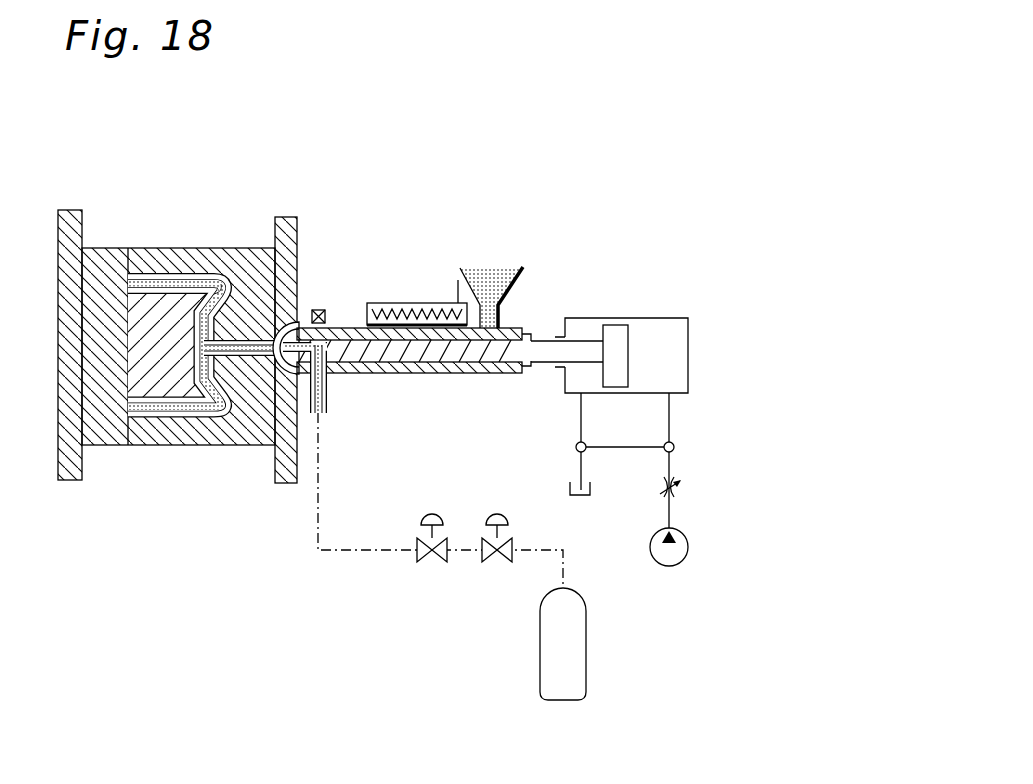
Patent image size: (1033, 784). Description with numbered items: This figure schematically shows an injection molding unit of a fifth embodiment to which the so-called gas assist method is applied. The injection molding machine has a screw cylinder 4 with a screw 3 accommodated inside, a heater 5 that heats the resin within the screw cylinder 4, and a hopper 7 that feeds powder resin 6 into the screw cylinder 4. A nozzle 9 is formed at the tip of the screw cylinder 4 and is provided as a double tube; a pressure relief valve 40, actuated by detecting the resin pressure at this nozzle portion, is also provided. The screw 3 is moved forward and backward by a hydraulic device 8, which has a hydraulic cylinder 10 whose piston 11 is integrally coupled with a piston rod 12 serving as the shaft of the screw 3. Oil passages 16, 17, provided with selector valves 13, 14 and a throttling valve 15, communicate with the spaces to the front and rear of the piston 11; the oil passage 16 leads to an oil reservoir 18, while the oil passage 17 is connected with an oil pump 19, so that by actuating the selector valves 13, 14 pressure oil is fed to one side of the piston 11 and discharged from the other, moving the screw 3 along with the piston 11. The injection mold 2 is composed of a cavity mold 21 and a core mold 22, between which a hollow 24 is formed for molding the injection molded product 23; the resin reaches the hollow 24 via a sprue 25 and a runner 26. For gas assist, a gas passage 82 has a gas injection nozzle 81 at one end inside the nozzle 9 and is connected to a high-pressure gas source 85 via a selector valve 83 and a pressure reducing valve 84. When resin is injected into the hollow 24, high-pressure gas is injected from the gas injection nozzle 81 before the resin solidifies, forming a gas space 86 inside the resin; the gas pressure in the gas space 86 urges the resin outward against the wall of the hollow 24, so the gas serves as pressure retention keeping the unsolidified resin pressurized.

The injection mold 2 is at (177, 343).
The screw 3 is at (438, 360).
The screw cylinder 4 is at (482, 373).
The heater 5 is at (400, 303).
The powder resin 6 is at (480, 275).
The hopper 7 is at (513, 287).
The hydraulic device 8 is at (628, 468).
The nozzle 9 is at (318, 310).
The hydraulic cylinder 10 is at (578, 318).
The piston 11 is at (618, 326).
The piston rod 12 is at (541, 373).
The selector valve 13 is at (576, 447).
The selector valve 14 is at (674, 447).
The throttling valve 15 is at (680, 490).
The oil passage 16 is at (583, 407).
The oil passage 17 is at (671, 410).
The oil reservoir 18 is at (568, 487).
The oil pump 19 is at (688, 540).
The cavity mold 21 is at (197, 447).
The core mold 22 is at (95, 448).
The injection molded product 23 is at (149, 264).
The hollow 24 is at (149, 264).
The sprue 25 is at (244, 323).
The runner 26 is at (232, 297).
The pressure relief valve 40 is at (307, 323).
The gas injection nozzle 81 is at (245, 447).
The gas passage 82 is at (320, 533).
The selector valve 83 is at (430, 565).
The pressure reducing valve 84 is at (495, 565).
The high-pressure gas source 85 is at (587, 622).
The gas space 86 is at (148, 283).